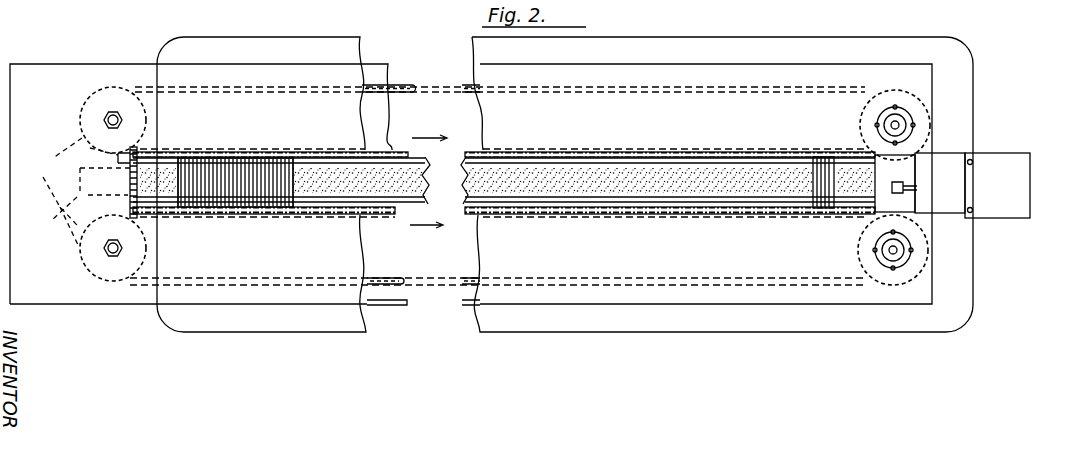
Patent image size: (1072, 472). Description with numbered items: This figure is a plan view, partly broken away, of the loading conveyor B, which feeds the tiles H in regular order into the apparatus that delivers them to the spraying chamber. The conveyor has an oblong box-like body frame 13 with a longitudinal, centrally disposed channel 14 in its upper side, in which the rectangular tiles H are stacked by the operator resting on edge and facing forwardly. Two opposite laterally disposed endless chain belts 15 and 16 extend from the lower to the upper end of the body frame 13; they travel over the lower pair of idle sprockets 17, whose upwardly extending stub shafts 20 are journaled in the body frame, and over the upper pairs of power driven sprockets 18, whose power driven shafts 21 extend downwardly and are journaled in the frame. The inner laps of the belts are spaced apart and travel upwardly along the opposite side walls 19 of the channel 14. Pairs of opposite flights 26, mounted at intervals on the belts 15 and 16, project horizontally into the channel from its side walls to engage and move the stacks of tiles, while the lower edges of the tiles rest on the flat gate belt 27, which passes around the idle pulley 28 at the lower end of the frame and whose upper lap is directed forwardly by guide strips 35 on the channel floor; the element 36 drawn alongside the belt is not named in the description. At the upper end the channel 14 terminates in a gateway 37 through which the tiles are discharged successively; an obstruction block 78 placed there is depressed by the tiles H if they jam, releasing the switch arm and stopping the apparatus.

The loading conveyor B is at (587, 298).
The body frame 13 is at (145, 297).
The channel 14 is at (178, 152).
The endless chain belt 15 is at (407, 85).
The endless chain belt 16 is at (393, 284).
The idle sprockets 17 is at (76, 181).
The power driven sprockets 18 is at (873, 116).
The side walls 19 is at (240, 152).
The stub shafts 20 is at (103, 119).
The power driven shafts 21 is at (898, 123).
The flights 26 is at (200, 155).
The gate belt 27 is at (163, 193).
The idle pulley 28 is at (49, 221).
The guide strips 35 is at (521, 163).
The guide band 36 is at (654, 153).
The gateway 37 is at (903, 172).
The obstruction block 78 is at (917, 188).
The tiles H is at (283, 156).